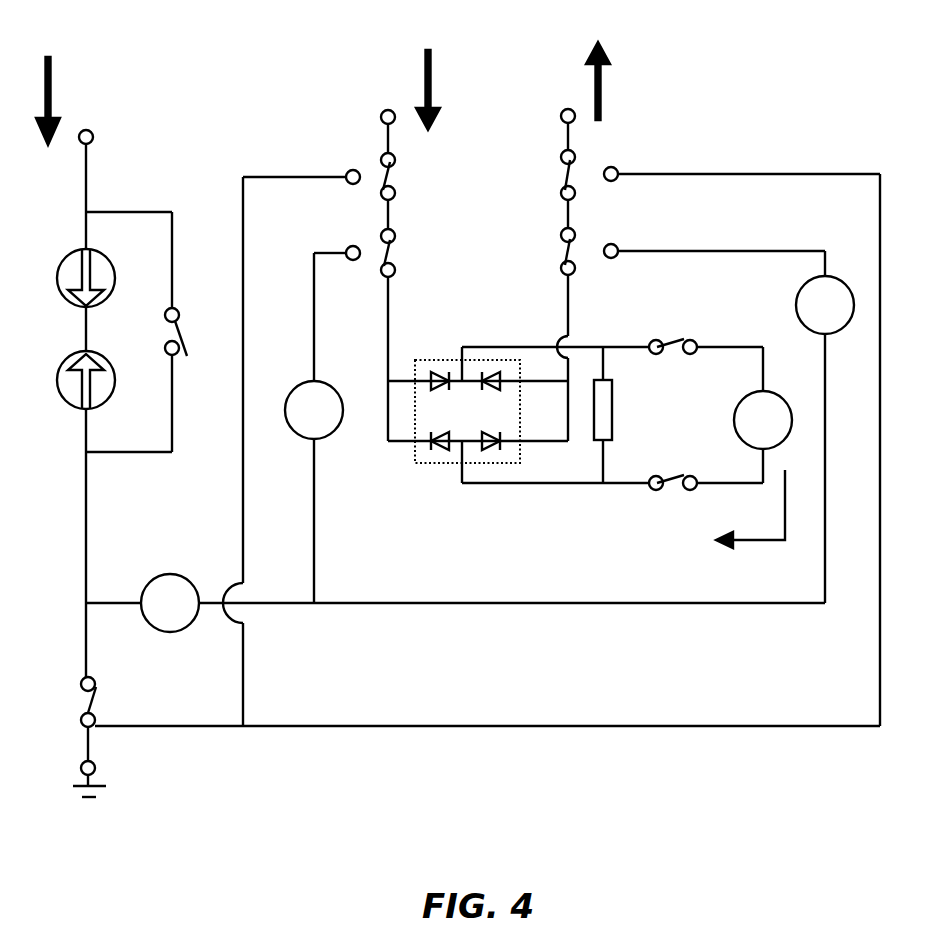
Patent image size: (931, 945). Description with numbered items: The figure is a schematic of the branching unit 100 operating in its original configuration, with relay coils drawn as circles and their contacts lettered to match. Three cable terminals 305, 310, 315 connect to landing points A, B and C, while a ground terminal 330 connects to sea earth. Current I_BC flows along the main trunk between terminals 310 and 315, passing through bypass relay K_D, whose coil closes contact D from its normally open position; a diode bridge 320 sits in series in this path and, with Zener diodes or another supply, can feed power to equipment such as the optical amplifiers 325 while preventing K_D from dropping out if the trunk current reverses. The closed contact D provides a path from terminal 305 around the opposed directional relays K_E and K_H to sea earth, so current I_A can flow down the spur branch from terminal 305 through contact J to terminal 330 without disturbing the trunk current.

The branching unit 100 is at (757, 803).
The terminal 305 is at (96, 135).
The terminal 310 is at (382, 117).
The terminal 315 is at (561, 116).
The diode bridge 320 is at (450, 466).
The optical amplifiers 325 is at (625, 414).
The terminal 330 is at (99, 767).